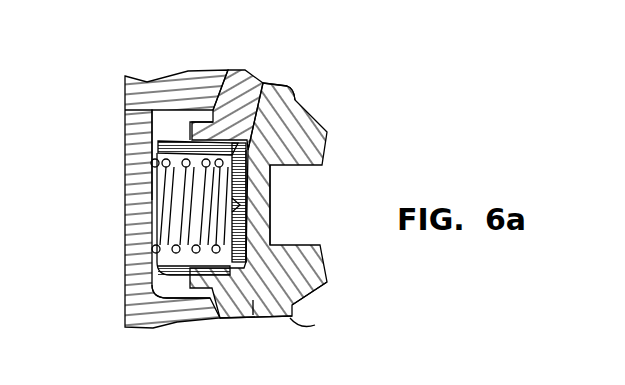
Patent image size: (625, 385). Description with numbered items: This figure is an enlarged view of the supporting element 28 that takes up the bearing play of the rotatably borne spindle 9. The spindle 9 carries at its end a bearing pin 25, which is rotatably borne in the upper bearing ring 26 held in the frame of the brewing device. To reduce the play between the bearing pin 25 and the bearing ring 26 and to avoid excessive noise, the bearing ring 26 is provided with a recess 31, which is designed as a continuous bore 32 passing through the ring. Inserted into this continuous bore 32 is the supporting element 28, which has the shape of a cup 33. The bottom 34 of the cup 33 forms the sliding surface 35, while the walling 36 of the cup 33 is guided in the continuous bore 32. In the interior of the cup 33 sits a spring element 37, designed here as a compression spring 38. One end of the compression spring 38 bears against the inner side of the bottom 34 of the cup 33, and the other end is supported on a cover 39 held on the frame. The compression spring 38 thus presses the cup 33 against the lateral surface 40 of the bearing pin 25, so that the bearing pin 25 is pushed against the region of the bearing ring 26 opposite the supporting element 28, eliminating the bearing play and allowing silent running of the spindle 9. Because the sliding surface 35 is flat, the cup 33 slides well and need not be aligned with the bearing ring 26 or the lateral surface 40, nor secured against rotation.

The spindle 9 is at (312, 112).
The bearing pin 25 is at (276, 96).
The bearing ring 26 is at (246, 70).
The supporting element 28 is at (130, 142).
The recess 31 is at (252, 240).
The continuous bore 32 is at (250, 300).
The cup 33 is at (172, 130).
The bottom 34 is at (250, 157).
The sliding surface 35 is at (232, 188).
The walling 36 is at (226, 260).
The spring element 37 is at (142, 245).
The compression spring 38 is at (165, 190).
The cover 39 is at (135, 95).
The lateral surface 40 is at (318, 328).